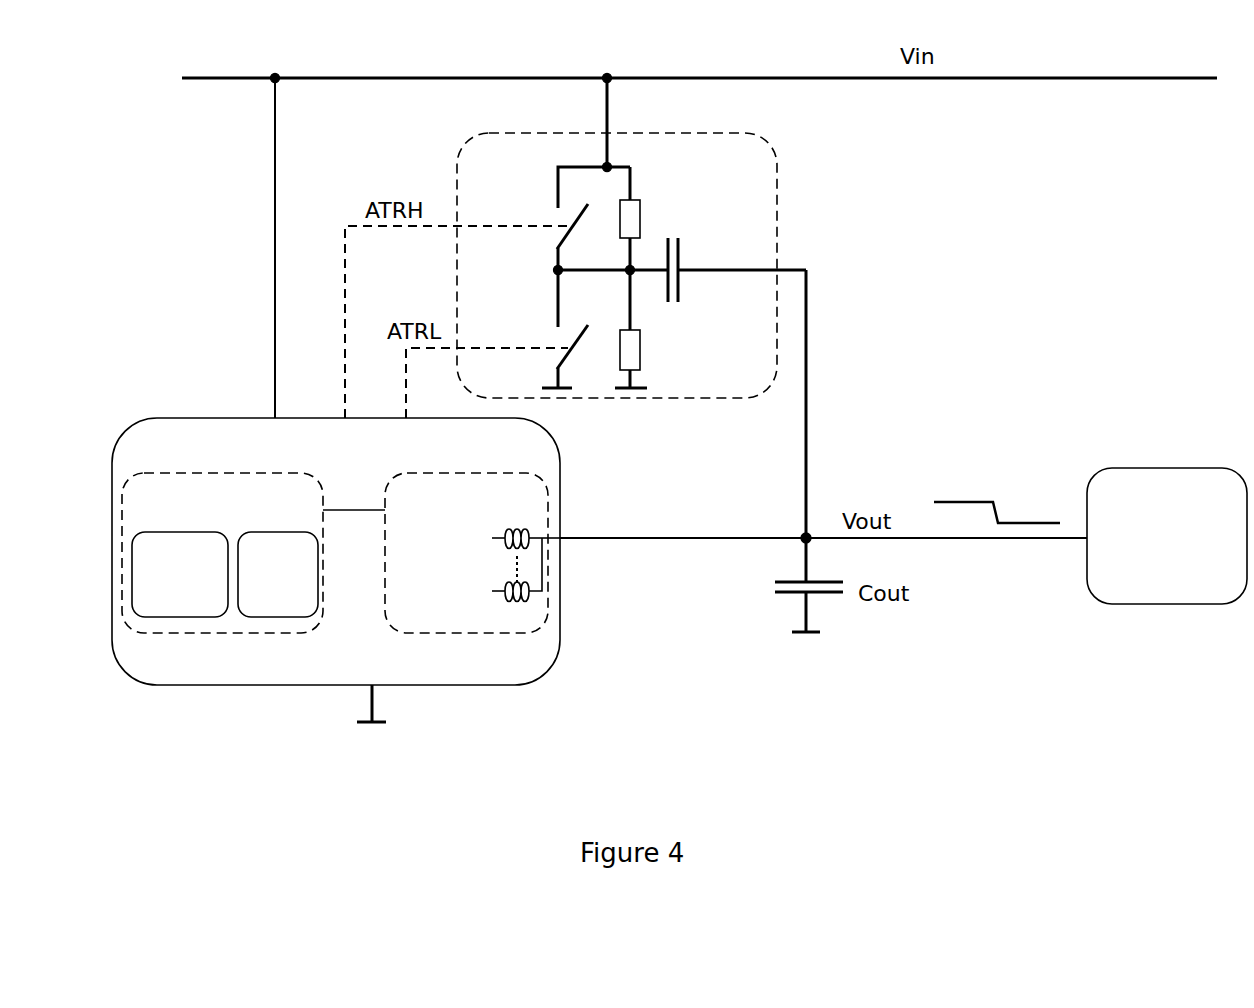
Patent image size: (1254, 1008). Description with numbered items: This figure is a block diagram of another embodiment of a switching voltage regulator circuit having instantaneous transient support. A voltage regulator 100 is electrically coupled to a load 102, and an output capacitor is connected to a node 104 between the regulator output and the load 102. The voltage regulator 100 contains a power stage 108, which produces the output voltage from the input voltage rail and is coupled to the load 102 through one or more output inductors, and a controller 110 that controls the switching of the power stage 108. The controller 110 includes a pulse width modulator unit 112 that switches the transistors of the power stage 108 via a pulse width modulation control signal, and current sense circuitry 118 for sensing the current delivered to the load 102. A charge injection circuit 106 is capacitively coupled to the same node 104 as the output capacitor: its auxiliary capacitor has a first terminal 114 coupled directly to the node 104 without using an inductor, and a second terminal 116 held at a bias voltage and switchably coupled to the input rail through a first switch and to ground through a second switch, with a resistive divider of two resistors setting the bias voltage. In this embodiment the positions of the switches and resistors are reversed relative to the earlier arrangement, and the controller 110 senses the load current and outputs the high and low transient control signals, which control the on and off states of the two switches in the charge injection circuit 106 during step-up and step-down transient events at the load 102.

The voltage regulator 100 is at (336, 570).
The load 102 is at (1167, 536).
The node 104 is at (797, 527).
The charge injection circuit 106 is at (777, 188).
The power stage 108 is at (472, 553).
The controller 110 is at (222, 553).
The pulse width modulator unit 112 is at (278, 574).
The first terminal 114 is at (684, 284).
The second terminal 116 is at (661, 284).
The current sense circuitry 118 is at (180, 574).